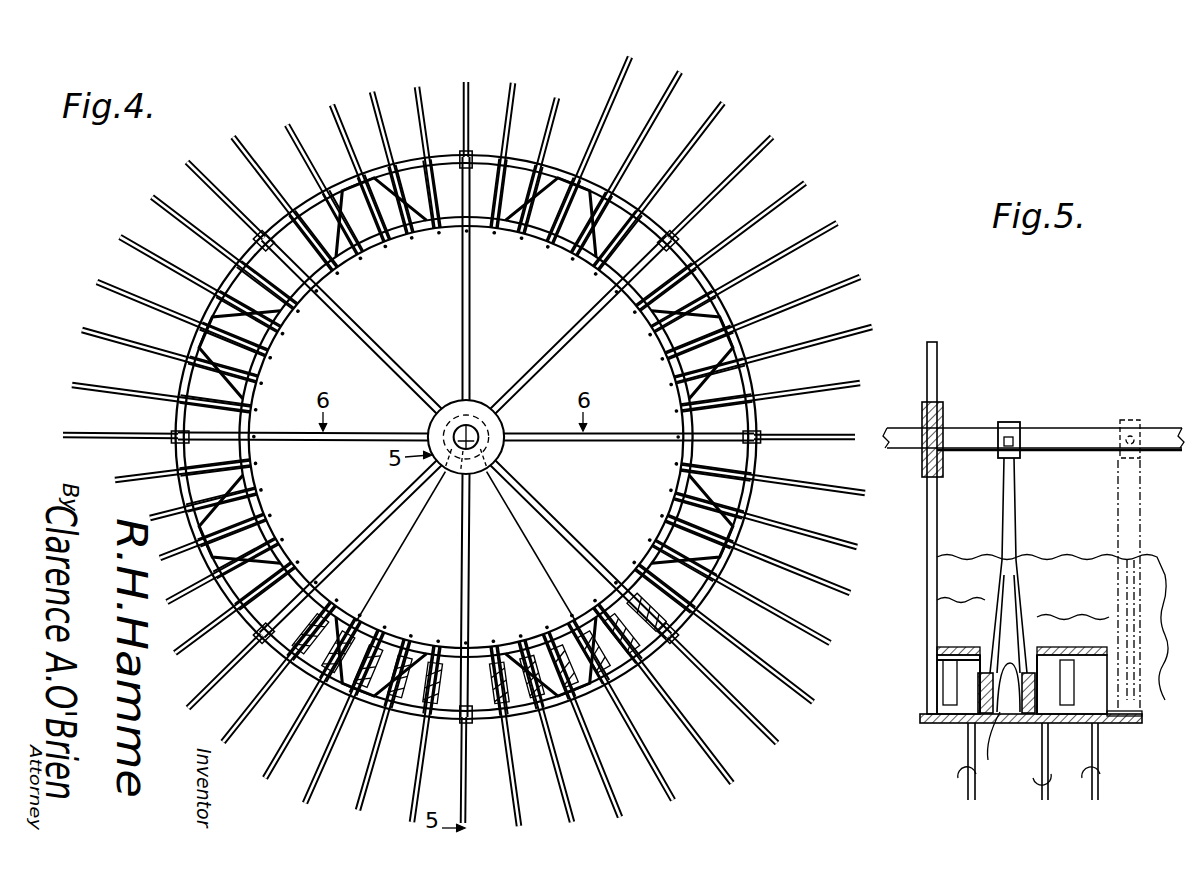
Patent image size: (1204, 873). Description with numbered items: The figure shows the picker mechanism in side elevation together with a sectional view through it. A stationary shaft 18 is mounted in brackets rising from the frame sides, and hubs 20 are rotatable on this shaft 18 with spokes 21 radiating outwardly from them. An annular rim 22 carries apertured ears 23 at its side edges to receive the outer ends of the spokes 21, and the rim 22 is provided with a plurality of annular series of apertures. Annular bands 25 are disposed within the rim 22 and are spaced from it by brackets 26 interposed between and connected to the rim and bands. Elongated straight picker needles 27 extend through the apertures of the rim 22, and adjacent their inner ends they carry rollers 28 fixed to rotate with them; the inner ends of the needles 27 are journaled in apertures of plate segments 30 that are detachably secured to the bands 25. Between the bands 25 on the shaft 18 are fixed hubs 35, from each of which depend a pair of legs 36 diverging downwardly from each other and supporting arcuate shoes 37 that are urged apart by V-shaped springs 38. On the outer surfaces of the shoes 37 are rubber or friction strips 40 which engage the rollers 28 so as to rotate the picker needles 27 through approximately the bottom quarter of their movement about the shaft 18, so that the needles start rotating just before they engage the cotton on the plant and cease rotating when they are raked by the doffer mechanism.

In FIG. 4, the stationary shaft 18 is at (498, 452).
In FIG. 5, the stationary shaft 18 is at (1055, 433).
In FIG. 4, the hubs 20 is at (460, 402).
In FIG. 5, the hubs 20 is at (945, 405).
In FIG. 4, the spokes 21 is at (472, 318).
In FIG. 5, the spokes 21 is at (934, 345).
In FIG. 4, the annular rim 22 is at (726, 270).
In FIG. 5, the annular rim 22 is at (1110, 722).
In FIG. 4, the apertured ears 23 is at (469, 150).
In FIG. 5, the apertured ears 23 is at (920, 718).
In FIG. 4, the annular bands 25 is at (668, 542).
In FIG. 5, the annular bands 25 is at (965, 655).
In FIG. 4, the brackets 26 is at (347, 190).
In FIG. 5, the brackets 26 is at (950, 680).
In FIG. 4, the picker needles 27 is at (118, 238).
In FIG. 5, the picker needles 27 is at (1043, 790).
In FIG. 4, the rollers 28 is at (227, 340).
In FIG. 5, the rollers 28 is at (965, 712).
In FIG. 4, the plate segments 30 is at (688, 462).
In FIG. 5, the plate segments 30 is at (1062, 618).
In FIG. 4, the hubs 35 is at (500, 425).
In FIG. 5, the hubs 35 is at (1022, 455).
In FIG. 4, the legs 36 is at (402, 530).
In FIG. 5, the legs 36 is at (1128, 505).
In FIG. 5, the arcuate shoes 37 is at (1008, 720).
In FIG. 5, the V-shaped springs 38 is at (978, 688).
In FIG. 4, the friction strips 40 is at (388, 648).
In FIG. 5, the friction strips 40 is at (1012, 762).